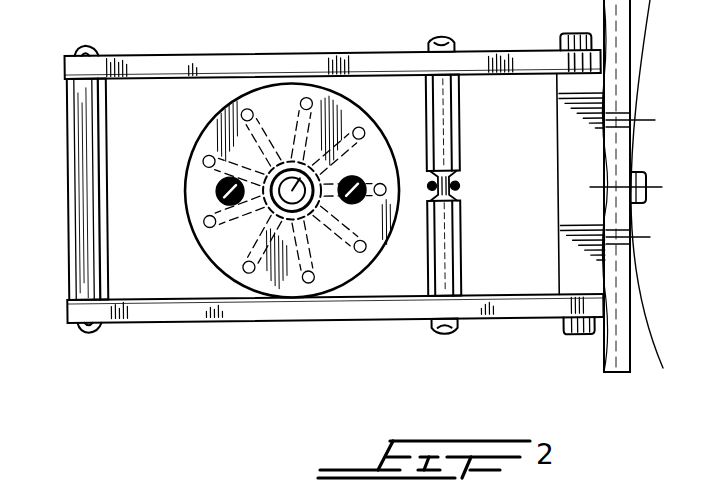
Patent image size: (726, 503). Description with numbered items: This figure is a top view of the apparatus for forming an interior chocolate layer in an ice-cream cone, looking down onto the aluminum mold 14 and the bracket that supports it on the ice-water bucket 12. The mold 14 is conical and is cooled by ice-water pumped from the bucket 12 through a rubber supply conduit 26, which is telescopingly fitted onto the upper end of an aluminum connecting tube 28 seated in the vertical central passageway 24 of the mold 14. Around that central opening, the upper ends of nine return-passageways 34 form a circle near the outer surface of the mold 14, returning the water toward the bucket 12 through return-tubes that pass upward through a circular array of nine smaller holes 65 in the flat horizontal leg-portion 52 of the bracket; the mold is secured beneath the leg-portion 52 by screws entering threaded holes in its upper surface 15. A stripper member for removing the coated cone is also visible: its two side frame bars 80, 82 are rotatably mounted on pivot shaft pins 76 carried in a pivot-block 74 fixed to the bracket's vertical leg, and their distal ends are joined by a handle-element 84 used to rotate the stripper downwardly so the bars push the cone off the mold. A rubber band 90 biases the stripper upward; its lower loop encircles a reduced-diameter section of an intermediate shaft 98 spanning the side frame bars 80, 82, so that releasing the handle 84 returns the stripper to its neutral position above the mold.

The bucket 12 is at (632, 58).
The mold 14 is at (176, 192).
The upper surface 15 is at (231, 249).
The central passageway 24 is at (309, 170).
The supply conduit 26 is at (290, 161).
The connecting tube 28 is at (316, 166).
The return-passageways 34 is at (214, 135).
The horizontal leg-portion 52 is at (490, 134).
The circular holes 65 is at (203, 223).
The pivot-block 74 is at (567, 205).
The pivot shaft pins 76 is at (575, 40).
The side frame bar 80 is at (108, 56).
The side frame bar 82 is at (206, 318).
The handle-element 84 is at (72, 176).
The rubber band 90 is at (460, 188).
The intermediate shaft 98 is at (460, 290).